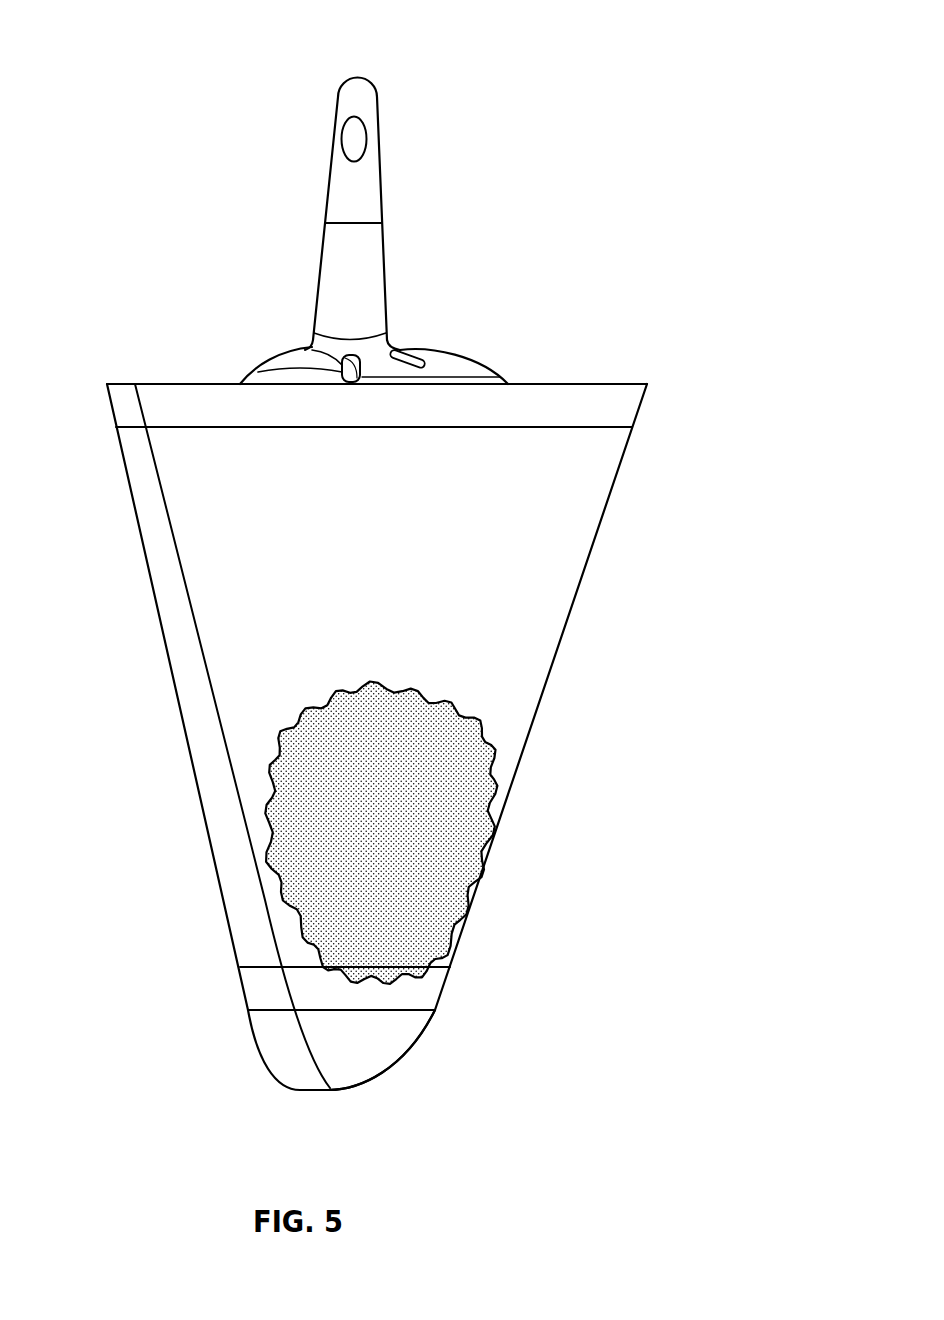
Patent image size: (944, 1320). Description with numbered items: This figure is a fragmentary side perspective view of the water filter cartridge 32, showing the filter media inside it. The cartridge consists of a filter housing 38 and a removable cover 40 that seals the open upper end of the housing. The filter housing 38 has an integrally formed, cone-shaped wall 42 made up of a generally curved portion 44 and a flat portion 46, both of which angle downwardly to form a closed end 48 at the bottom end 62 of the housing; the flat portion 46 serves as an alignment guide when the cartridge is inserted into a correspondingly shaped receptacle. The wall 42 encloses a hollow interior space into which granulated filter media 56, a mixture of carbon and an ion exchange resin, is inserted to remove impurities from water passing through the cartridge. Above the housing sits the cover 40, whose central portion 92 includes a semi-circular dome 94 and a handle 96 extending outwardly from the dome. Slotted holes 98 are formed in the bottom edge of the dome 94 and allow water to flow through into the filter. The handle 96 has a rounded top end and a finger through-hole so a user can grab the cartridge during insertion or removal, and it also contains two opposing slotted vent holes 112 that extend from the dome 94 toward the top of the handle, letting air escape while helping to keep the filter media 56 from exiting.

The water filter cartridge 32 is at (670, 110).
The filter housing 38 is at (622, 666).
The removable cover 40 is at (421, 276).
The cone-shaped wall 42 is at (148, 593).
The curved portion 44 is at (603, 523).
The flat portion 46 is at (124, 494).
The closed end 48 is at (230, 1024).
The filter media 56 is at (420, 808).
The bottom end 62 is at (425, 1030).
The central portion 92 is at (452, 315).
The semi-circular dome 94 is at (478, 355).
The handle 96 is at (332, 170).
The slotted holes 98 is at (348, 368).
The slotted vent holes 112 is at (358, 128).